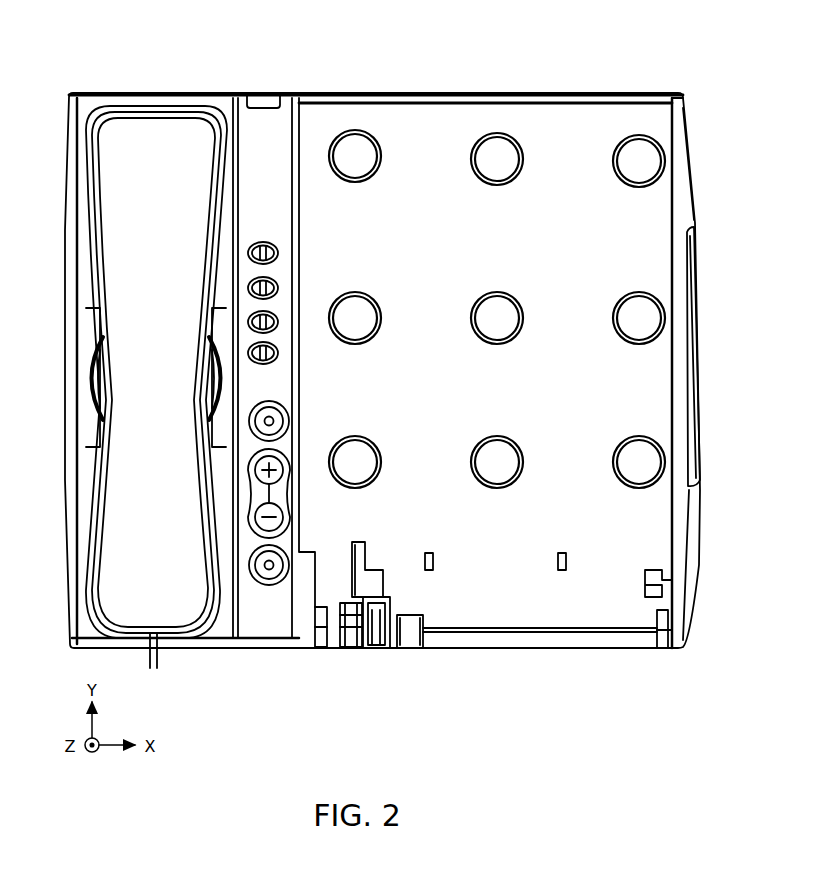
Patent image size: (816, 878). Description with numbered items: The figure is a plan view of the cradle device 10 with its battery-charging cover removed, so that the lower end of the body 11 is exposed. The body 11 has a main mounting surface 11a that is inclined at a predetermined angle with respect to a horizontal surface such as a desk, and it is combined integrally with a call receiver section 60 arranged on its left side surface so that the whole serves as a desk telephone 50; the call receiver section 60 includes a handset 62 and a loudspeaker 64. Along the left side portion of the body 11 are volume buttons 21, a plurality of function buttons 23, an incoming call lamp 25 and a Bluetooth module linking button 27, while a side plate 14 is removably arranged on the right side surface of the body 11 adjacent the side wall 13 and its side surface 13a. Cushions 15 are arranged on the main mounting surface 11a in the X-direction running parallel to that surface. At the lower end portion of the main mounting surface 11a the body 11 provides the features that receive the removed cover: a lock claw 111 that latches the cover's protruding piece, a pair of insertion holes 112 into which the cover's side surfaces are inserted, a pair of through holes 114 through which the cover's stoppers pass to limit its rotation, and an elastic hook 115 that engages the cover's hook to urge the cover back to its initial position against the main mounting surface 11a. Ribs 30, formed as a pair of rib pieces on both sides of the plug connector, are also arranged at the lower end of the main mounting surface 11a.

The cradle device 10 is at (622, 72).
The body 11 is at (498, 95).
The main mounting surface 11a is at (540, 118).
The side wall 13 is at (650, 127).
The side surface 13a is at (657, 210).
The side plate 14 is at (688, 503).
The cushions 15 is at (362, 163).
The volume buttons 21 is at (283, 517).
The function buttons 23 is at (283, 345).
The incoming call lamp 25 is at (263, 100).
The Bluetooth module linking button 27 is at (268, 580).
The ribs 30 is at (429, 572).
The desk telephone 50 is at (85, 84).
The call receiver section 60 is at (205, 110).
The handset 62 is at (150, 445).
The loudspeaker 64 is at (96, 378).
The lock claw 111 is at (378, 640).
The insertion holes 112 is at (321, 640).
The through holes 114 is at (377, 572).
The elastic hook 115 is at (352, 640).